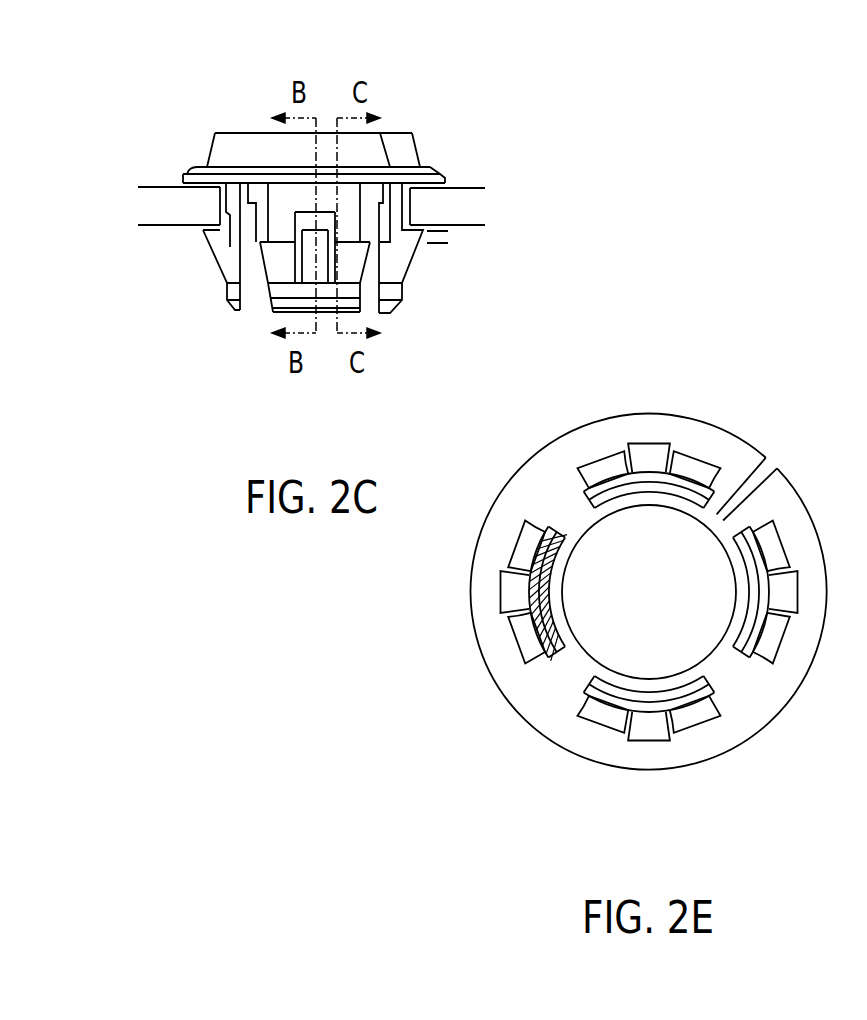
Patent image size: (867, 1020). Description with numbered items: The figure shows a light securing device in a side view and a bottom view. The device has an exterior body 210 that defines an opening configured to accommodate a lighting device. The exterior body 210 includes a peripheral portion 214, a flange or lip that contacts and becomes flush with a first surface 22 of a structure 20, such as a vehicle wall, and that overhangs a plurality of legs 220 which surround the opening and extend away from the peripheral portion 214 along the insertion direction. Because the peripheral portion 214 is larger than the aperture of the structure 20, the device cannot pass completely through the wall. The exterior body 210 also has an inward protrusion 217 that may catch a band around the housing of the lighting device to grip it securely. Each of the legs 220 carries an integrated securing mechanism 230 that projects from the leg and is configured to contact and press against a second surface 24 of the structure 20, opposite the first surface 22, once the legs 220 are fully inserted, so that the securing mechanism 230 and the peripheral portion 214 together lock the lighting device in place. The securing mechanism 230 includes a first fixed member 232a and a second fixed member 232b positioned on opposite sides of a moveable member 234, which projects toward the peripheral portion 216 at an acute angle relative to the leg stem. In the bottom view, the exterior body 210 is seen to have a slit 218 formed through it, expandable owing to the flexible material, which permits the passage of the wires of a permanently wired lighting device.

In FIG. 2C, the exterior body 210 is at (102, 52).
In FIG. 2C, the peripheral portion 216 is at (213, 133).
In FIG. 2C, the peripheral portion 214 is at (187, 175).
In FIG. 2E, the peripheral portion 214 is at (612, 423).
In FIG. 2C, the inward protrusion 217 is at (378, 200).
In FIG. 2C, the structure 20 is at (523, 147).
In FIG. 2C, the first surface 22 is at (467, 188).
In FIG. 2C, the second surface 24 is at (467, 226).
In FIG. 2C, the legs 220 is at (232, 312).
In FIG. 2C, the securing mechanism 230 is at (348, 432).
In FIG. 2E, the securing mechanism 230 is at (762, 818).
In FIG. 2C, the first fixed member 232a is at (280, 263).
In FIG. 2E, the first fixed member 232a is at (605, 713).
In FIG. 2C, the second fixed member 232b is at (350, 265).
In FIG. 2E, the second fixed member 232b is at (698, 707).
In FIG. 2C, the moveable member 234 is at (307, 258).
In FIG. 2E, the moveable member 234 is at (655, 723).
In FIG. 2E, the slit 218 is at (773, 462).